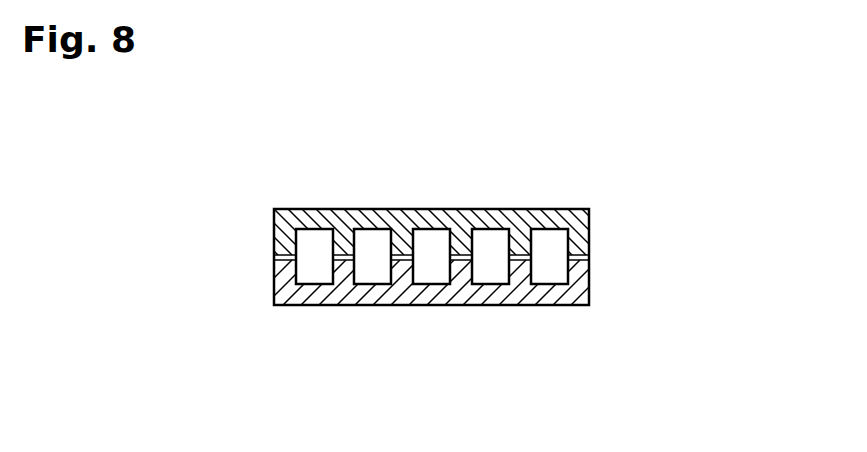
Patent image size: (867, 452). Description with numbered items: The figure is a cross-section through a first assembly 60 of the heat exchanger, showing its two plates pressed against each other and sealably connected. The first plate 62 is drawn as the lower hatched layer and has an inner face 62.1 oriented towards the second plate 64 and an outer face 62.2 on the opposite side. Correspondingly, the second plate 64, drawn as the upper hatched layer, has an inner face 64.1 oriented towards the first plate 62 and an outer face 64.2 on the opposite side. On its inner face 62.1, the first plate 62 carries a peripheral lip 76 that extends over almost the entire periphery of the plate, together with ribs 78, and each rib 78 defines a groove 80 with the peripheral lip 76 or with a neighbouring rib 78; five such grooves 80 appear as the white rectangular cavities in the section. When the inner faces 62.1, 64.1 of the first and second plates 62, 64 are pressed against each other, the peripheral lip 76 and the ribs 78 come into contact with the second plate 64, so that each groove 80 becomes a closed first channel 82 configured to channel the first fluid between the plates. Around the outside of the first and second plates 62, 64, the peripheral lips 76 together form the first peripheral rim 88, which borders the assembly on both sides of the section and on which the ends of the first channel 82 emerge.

The first assembly 60 is at (266, 202).
The first plate 62 is at (578, 299).
The inner face of the first plate 62.1 is at (578, 238).
The outer face of the first plate 62.2 is at (405, 305).
The second plate 64 is at (566, 202).
The inner face of the second plate 64.1 is at (285, 260).
The outer face of the second plate 64.2 is at (427, 209).
The peripheral lip 76 is at (283, 261).
The rib 78 is at (341, 255).
The groove 80 is at (311, 229).
The first channel 82 is at (308, 242).
The first peripheral rim 88 is at (275, 293).